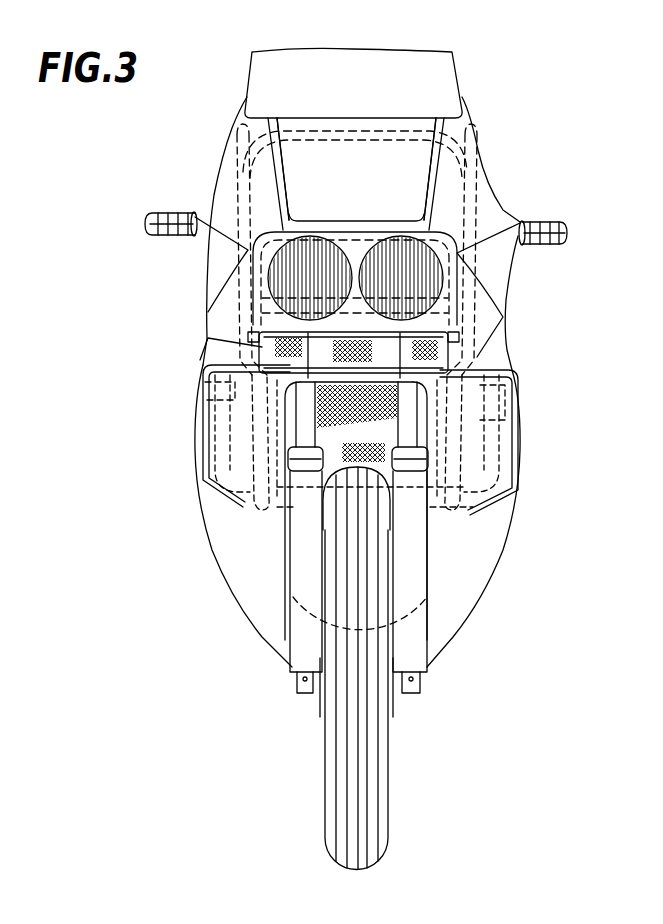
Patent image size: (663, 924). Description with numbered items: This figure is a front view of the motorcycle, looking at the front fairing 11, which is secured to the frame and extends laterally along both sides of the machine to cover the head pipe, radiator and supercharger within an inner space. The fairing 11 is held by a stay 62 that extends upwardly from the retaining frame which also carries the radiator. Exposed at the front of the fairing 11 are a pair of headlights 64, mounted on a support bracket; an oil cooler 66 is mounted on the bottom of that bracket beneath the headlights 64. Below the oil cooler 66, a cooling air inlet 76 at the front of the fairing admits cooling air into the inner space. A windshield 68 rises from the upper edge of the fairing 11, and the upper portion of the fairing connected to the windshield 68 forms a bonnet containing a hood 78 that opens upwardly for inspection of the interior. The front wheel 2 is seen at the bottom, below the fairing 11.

The front wheel 2 is at (337, 750).
The front fairing 11 is at (212, 280).
The stay 62 is at (237, 172).
The headlights 64 is at (378, 247).
The oil cooler 66 is at (208, 337).
The windshield 68 is at (363, 68).
The cooling air inlet 76 is at (317, 424).
The hood 78 is at (370, 153).